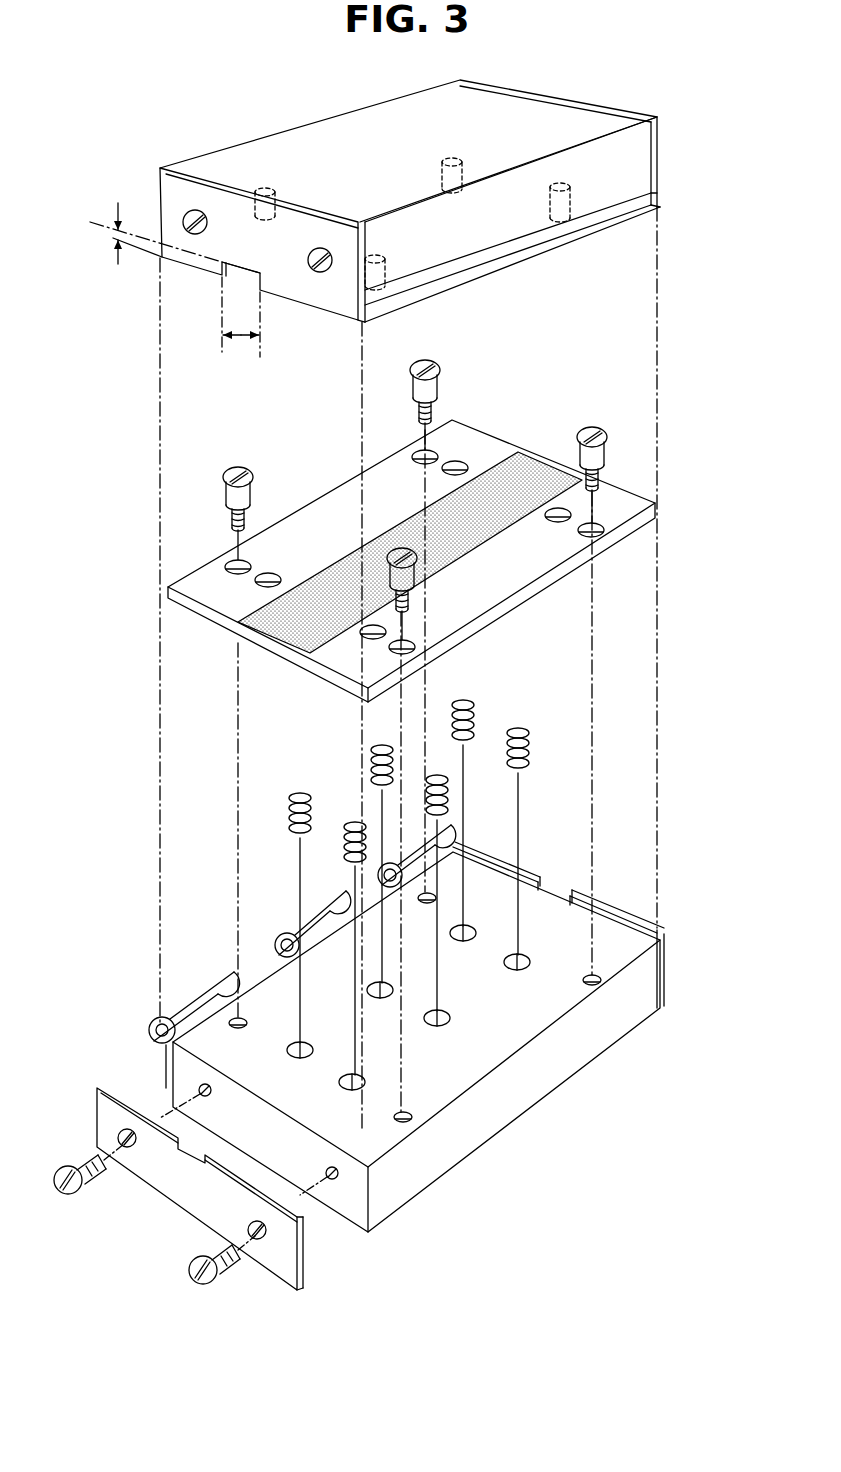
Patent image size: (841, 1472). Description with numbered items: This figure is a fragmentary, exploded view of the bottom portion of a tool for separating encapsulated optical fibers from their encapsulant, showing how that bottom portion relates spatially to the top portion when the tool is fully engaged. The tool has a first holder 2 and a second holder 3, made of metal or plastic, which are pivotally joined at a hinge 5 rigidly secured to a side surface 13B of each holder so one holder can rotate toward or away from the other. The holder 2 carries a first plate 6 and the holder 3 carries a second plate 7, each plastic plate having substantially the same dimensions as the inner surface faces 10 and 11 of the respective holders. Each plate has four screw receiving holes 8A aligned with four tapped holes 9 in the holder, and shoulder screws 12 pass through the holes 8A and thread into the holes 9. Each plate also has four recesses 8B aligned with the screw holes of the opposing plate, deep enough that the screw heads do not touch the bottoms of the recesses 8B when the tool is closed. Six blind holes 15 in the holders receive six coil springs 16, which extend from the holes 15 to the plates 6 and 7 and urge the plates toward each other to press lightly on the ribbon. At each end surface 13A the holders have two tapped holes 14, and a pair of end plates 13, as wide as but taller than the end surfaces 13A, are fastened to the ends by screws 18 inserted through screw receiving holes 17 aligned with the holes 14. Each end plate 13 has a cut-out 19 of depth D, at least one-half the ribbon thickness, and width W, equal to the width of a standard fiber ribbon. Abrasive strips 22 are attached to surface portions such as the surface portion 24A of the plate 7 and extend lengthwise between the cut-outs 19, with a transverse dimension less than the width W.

The first holder 2 is at (322, 140).
The second holder 3 is at (475, 1150).
The hinge 5 is at (150, 1024).
The first plate 6 is at (662, 210).
The second plate 7 is at (203, 612).
The screw receiving holes 8A is at (228, 560).
The recesses 8B is at (572, 190).
The tapped holes 9 is at (437, 896).
The inner surface face 10 is at (662, 194).
The inner surface face 11 is at (622, 962).
The shoulder screws 12 is at (604, 433).
The end plates 13 is at (158, 208).
The end surface 13A is at (345, 1205).
The side surface 13B is at (528, 1086).
The tapped holes 14 is at (200, 1088).
The blind holes 15 is at (505, 966).
The coil springs 16 is at (350, 826).
The screw receiving holes 17 is at (129, 1148).
The screws 18 is at (72, 1194).
The cut-out 19 is at (232, 268).
The abrasive strips 22 is at (287, 645).
The surface portion 24A is at (308, 535).
The depth of cut-out D is at (112, 226).
The width of cut-out W is at (247, 340).